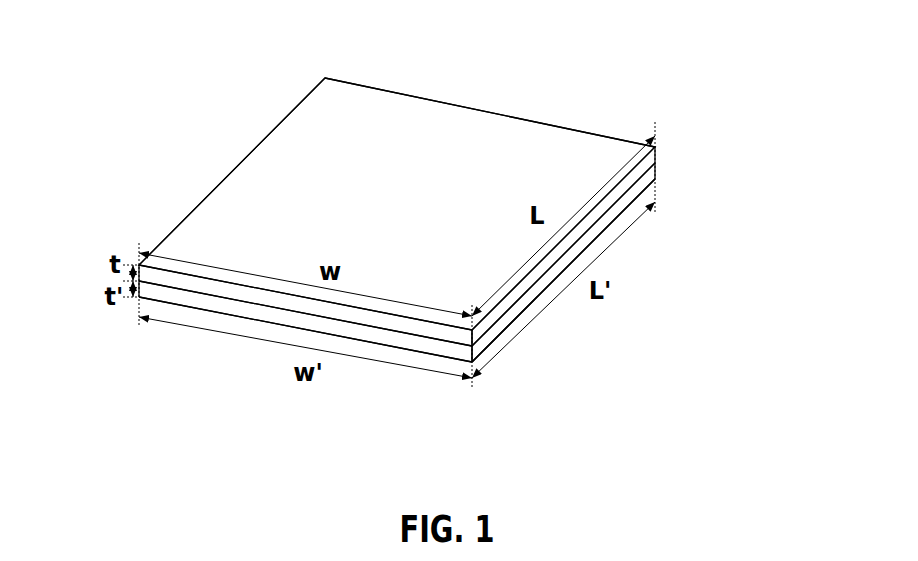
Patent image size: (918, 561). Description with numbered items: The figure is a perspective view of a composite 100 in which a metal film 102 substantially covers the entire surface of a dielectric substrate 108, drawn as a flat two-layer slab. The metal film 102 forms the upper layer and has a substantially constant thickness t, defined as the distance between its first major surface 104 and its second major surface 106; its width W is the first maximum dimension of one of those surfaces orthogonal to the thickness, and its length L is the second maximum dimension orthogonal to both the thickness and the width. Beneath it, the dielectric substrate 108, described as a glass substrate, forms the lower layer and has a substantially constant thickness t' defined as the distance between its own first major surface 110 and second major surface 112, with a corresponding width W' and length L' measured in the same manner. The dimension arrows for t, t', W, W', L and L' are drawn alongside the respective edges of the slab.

The composite 100 is at (466, 213).
The metal film 102 is at (543, 130).
The first major surface 104 is at (613, 157).
The second major surface 106 is at (648, 172).
The dielectric substrate 108 is at (487, 343).
The first major surface 110 is at (620, 200).
The second major surface 112 is at (617, 223).